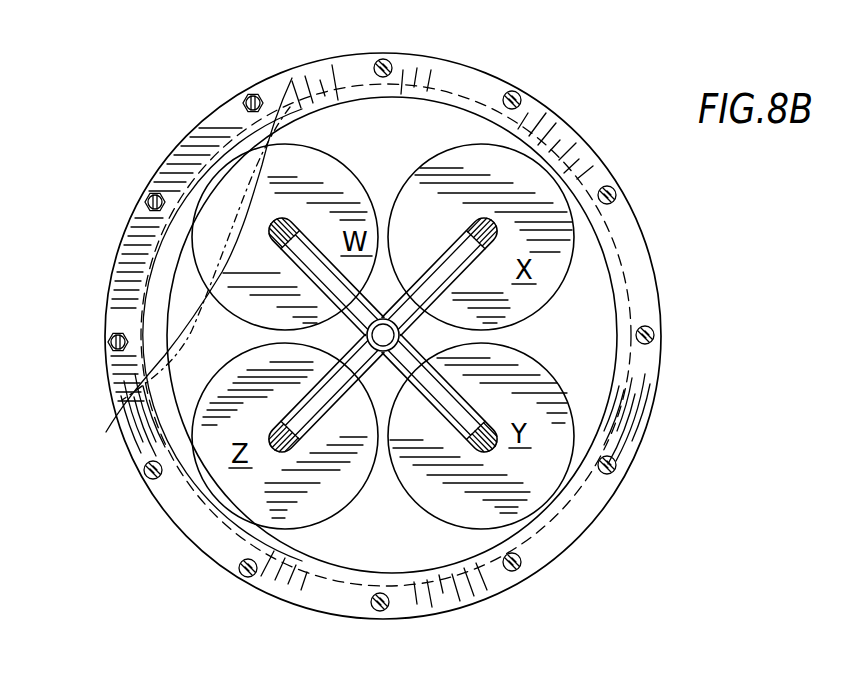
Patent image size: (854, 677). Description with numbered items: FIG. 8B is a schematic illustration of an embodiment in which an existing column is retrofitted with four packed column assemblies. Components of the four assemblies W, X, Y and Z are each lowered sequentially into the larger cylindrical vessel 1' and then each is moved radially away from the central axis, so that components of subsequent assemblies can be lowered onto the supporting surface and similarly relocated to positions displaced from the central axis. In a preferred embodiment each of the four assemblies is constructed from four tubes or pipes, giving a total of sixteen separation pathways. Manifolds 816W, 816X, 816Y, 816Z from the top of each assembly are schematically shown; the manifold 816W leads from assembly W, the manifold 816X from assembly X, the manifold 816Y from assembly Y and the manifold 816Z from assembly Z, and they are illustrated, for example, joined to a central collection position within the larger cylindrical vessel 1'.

The larger cylindrical vessel 1' is at (383, 323).
The manifold 816W is at (310, 258).
The manifold 816X is at (463, 268).
The manifold 816Y is at (457, 417).
The manifold 816Z is at (293, 408).